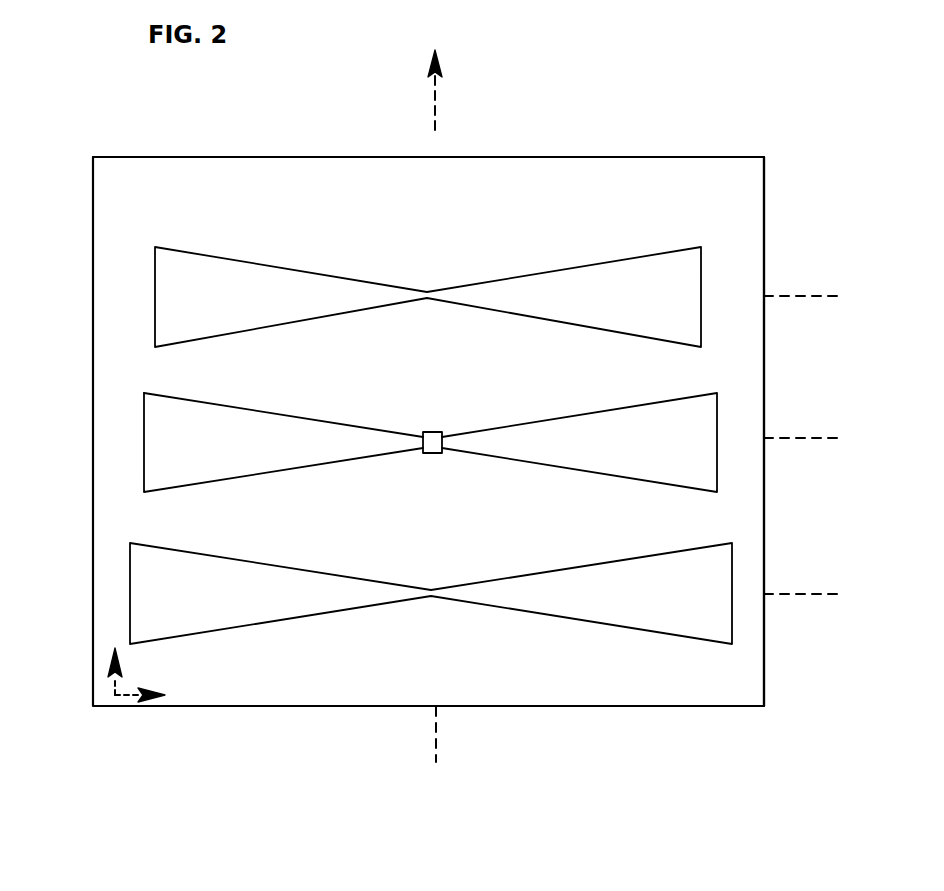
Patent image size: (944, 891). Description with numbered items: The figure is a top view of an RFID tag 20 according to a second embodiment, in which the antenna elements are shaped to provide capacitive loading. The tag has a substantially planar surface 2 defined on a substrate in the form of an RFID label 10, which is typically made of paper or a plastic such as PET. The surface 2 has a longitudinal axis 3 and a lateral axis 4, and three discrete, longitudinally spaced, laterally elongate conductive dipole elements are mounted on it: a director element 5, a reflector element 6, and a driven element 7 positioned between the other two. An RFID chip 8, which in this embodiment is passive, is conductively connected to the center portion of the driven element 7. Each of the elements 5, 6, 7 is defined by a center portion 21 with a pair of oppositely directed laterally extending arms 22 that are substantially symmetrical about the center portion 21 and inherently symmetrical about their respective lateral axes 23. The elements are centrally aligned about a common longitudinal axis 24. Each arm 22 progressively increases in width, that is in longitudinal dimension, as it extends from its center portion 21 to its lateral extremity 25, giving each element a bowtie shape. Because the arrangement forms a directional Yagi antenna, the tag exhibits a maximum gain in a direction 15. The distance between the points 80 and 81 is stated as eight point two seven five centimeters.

The surface 2 is at (282, 170).
The longitudinal axis 3 is at (113, 695).
The lateral axis 4 is at (130, 697).
The director element 5 is at (166, 312).
The reflector element 6 is at (148, 613).
The driven element 7 is at (158, 468).
The RFID chip 8 is at (432, 454).
The RFID label 10 is at (677, 176).
The direction 15 is at (437, 103).
The RFID tag 20 is at (582, 122).
The center portion 21 is at (440, 292).
The arms 22 is at (215, 276).
The lateral axes 23 is at (812, 293).
The common longitudinal axis 24 is at (433, 740).
The lateral extremity 25 is at (155, 247).
The point 80 is at (701, 243).
The point 81 is at (728, 645).